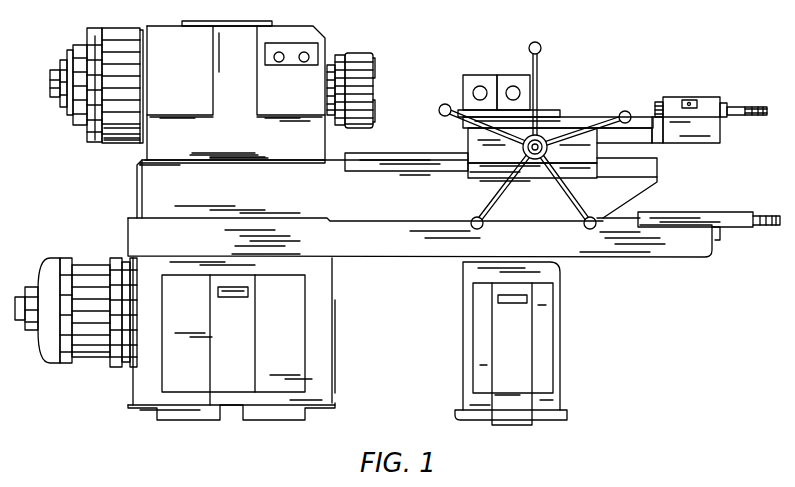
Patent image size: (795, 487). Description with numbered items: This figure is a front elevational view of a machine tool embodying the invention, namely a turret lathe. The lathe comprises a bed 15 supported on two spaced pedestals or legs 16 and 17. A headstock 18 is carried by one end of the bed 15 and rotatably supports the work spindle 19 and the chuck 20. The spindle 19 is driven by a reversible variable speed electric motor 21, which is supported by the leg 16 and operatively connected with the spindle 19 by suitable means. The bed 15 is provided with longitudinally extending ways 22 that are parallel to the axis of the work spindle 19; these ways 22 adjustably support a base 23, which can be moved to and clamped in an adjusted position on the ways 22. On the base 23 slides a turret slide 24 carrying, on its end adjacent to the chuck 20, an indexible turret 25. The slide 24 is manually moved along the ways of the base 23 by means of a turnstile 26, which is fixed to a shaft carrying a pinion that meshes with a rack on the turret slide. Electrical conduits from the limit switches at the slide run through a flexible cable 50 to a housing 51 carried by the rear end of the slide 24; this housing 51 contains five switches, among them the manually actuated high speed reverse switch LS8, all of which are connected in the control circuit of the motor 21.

The bed 15 is at (399, 212).
The pedestal 16 is at (280, 350).
The pedestal 17 is at (513, 353).
The headstock 18 is at (240, 71).
The work spindle 19 is at (343, 75).
The chuck 20 is at (363, 78).
The reversible variable speed electric motor 21 is at (85, 275).
The ways 22 is at (428, 147).
The base 23 is at (560, 154).
The turret slide 24 is at (585, 122).
The indexible turret 25 is at (488, 78).
The turnstile 26 is at (538, 92).
The flexible cable 50 is at (757, 114).
The housing 51 is at (708, 98).
The high speed reverse switch LS8 is at (689, 100).